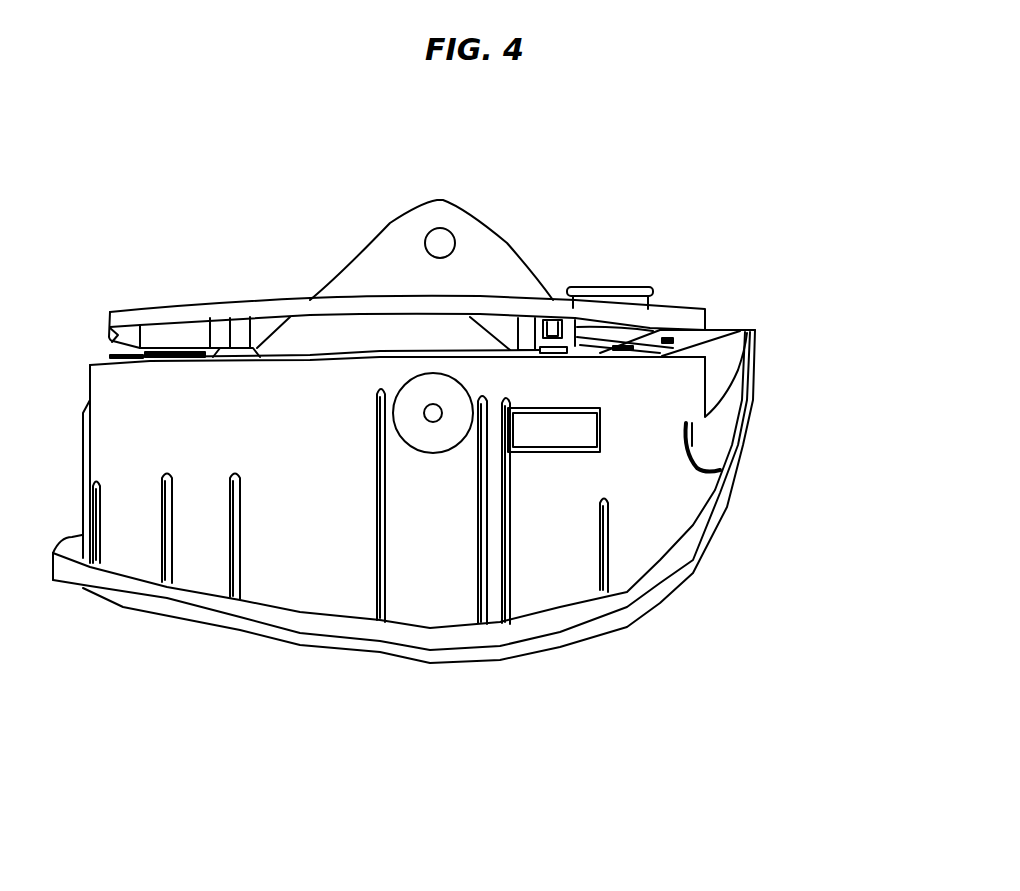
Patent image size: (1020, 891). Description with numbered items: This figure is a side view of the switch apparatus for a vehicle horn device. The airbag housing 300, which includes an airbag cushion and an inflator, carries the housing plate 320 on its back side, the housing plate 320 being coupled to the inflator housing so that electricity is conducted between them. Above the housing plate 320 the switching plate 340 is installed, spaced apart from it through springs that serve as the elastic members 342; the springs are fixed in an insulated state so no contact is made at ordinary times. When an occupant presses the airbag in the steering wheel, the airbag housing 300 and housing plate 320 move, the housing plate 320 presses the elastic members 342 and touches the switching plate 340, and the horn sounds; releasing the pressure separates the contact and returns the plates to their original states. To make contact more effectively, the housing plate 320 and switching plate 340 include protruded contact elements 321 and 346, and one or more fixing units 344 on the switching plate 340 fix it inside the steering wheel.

The airbag housing 300 is at (430, 558).
The housing plate 320 is at (670, 362).
The protruded contact element 321 is at (575, 340).
The switching plate 340 is at (683, 315).
The elastic member 342 is at (630, 287).
The fixing unit 344 is at (395, 237).
The protruded contact element 346 is at (552, 320).